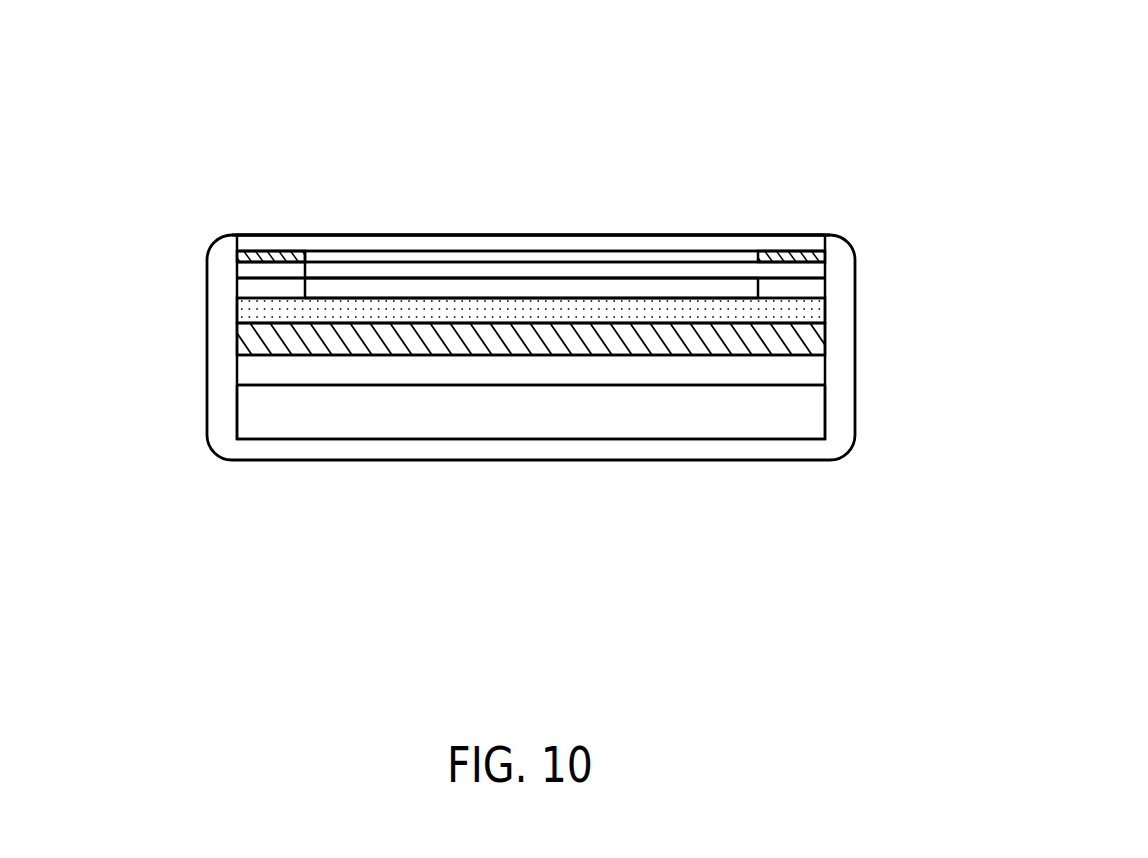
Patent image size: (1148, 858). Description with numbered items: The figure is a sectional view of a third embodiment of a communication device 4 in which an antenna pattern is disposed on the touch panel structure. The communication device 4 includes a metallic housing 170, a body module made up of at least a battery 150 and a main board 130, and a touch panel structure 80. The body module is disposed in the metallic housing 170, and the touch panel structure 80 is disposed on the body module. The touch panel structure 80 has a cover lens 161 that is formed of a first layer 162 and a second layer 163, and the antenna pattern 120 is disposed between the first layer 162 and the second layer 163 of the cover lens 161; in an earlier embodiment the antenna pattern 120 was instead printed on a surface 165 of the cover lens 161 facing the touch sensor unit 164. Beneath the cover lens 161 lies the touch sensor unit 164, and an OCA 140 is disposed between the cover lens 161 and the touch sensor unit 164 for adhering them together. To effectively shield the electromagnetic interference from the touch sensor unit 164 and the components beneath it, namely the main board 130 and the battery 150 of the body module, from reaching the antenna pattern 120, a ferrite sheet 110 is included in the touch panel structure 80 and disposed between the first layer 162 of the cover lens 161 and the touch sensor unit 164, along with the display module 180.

The communication device 4 is at (755, 75).
The touch panel structure 80 is at (137, 166).
The ferrite sheet 110 is at (252, 288).
The antenna pattern 120 is at (818, 255).
The main board 130 is at (812, 375).
The OCA 140 is at (247, 310).
The battery 150 is at (813, 417).
The cover lens 161 is at (218, 143).
The first layer 162 is at (343, 273).
The second layer 163 is at (372, 245).
The touch sensor unit 164 is at (330, 288).
The surface of the cover lens 165 is at (790, 252).
The metallic housing 170 is at (750, 450).
The display module 180 is at (818, 333).